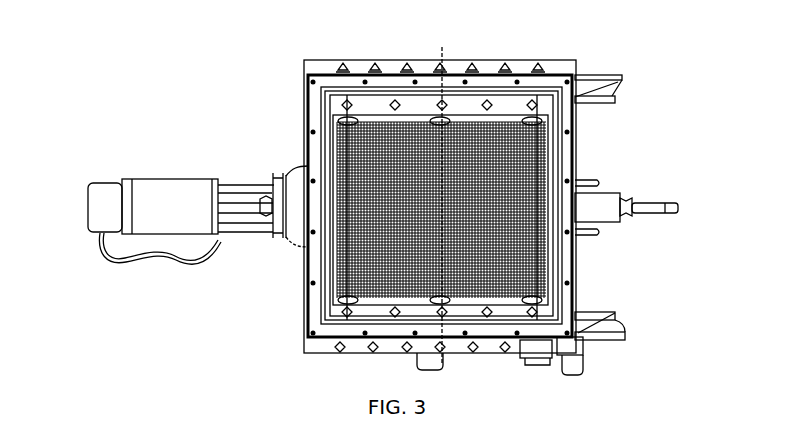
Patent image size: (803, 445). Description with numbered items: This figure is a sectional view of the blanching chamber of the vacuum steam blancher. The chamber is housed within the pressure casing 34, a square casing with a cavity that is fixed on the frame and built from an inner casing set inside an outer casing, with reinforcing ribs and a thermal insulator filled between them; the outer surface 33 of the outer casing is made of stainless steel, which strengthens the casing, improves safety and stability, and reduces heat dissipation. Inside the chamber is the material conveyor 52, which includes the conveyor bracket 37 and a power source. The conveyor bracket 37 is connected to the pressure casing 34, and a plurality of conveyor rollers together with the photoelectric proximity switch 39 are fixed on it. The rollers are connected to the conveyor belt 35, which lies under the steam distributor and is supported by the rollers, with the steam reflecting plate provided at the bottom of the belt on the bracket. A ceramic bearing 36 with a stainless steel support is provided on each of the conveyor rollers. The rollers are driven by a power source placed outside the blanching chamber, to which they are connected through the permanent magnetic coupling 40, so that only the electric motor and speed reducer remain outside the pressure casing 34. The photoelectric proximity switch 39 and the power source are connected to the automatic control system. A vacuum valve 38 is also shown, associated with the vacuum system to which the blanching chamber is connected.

The outer surface 33 is at (313, 338).
The pressure casing 34 is at (322, 247).
The conveyor belt 35 is at (377, 220).
The ceramic bearing 36 is at (350, 110).
The conveyor bracket 37 is at (370, 100).
The vacuum valve 38 is at (670, 164).
The photoelectric proximity switch 39 is at (670, 69).
The permanent magnetic coupling 40 is at (670, 292).
The conveyor 52 is at (407, 93).